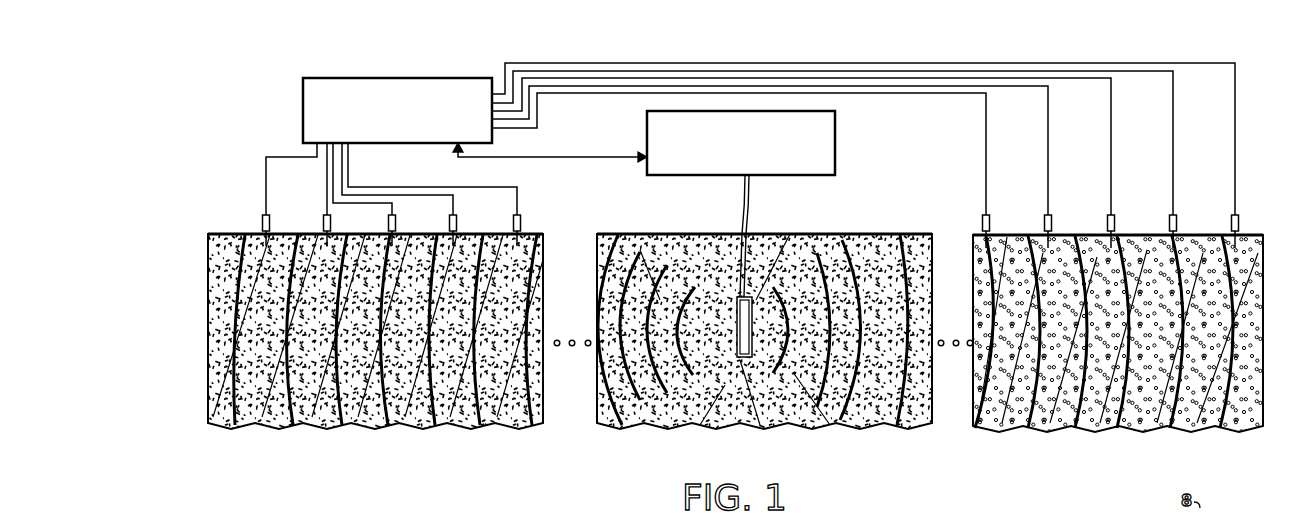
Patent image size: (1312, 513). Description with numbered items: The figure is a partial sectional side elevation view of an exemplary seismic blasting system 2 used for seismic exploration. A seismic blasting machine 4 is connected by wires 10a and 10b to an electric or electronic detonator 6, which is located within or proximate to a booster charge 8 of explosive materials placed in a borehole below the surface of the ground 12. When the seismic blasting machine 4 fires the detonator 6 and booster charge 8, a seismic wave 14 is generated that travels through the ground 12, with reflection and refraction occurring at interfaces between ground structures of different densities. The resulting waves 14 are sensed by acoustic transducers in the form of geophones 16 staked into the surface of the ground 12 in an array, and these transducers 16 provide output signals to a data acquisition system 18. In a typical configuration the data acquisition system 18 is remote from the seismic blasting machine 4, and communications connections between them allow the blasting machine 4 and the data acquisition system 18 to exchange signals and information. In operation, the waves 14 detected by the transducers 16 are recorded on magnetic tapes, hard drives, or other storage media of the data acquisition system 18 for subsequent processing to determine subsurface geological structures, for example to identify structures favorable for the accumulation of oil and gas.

The seismic blasting system 2 is at (232, 58).
The data acquisition system 18 is at (303, 112).
The seismic blasting machine 4 is at (647, 145).
The geophones 16 is at (262, 223).
The ground 12 is at (210, 273).
The seismic wave 14 is at (290, 425).
The wire 10a is at (742, 205).
The wire 10b is at (755, 196).
The booster charge 8 is at (779, 234).
The detonator 6 is at (767, 427).